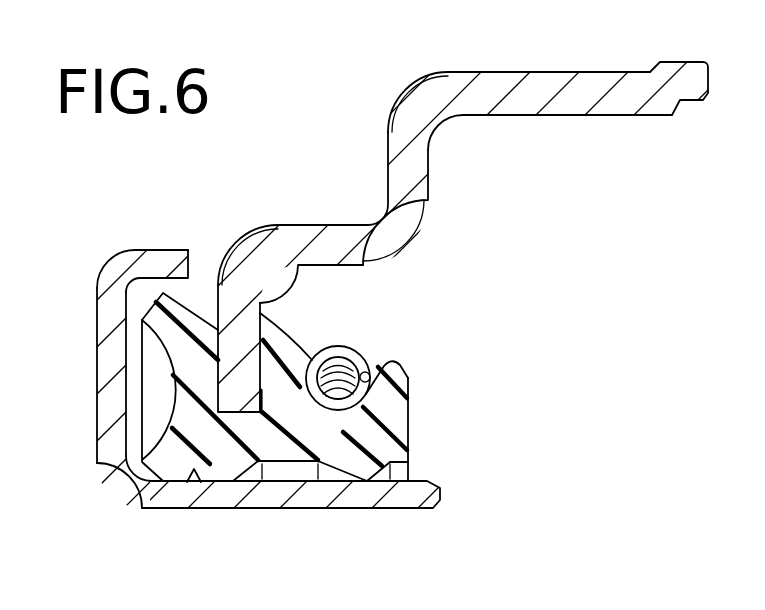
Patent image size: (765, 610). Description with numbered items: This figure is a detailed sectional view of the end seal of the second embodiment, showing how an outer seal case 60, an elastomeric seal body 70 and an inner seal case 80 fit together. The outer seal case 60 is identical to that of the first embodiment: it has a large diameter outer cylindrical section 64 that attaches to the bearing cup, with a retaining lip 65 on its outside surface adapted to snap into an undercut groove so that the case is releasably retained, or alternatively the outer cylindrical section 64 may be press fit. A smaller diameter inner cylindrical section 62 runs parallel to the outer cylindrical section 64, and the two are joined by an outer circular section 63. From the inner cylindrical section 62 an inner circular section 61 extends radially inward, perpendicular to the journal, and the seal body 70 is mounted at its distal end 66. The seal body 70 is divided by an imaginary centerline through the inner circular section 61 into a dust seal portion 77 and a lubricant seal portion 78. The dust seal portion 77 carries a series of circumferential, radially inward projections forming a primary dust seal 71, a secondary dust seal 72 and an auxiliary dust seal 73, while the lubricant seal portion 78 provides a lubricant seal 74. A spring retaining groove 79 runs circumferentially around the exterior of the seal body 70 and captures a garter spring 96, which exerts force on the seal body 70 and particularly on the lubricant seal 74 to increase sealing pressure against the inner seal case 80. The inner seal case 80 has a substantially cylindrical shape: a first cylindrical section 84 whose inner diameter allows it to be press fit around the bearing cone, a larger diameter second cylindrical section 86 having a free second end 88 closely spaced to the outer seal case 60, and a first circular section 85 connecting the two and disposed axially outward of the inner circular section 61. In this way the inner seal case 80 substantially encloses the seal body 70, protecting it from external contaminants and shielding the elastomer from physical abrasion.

The outer seal case 60 is at (382, 305).
The inner circular section 61 is at (264, 315).
The inner cylindrical section 62 is at (332, 267).
The outer circular section 63 is at (430, 148).
The outer cylindrical section 64 is at (565, 116).
The retaining lip 65 is at (688, 61).
The distal end 66 is at (232, 413).
The seal body 70 is at (309, 425).
The primary dust seal 71 is at (162, 507).
The secondary dust seal 72 is at (183, 486).
The auxiliary dust seal 73 is at (235, 482).
The lubricant seal 74 is at (362, 483).
The dust seal portion 77 is at (182, 398).
The lubricant seal portion 78 is at (399, 366).
The spring retaining groove 79 is at (338, 411).
The inner seal case 80 is at (382, 305).
The first cylindrical section 84 is at (433, 489).
The first circular section 85 is at (97, 425).
The second cylindrical section 86 is at (137, 252).
The second end 88 is at (187, 250).
The spring 96 is at (336, 348).